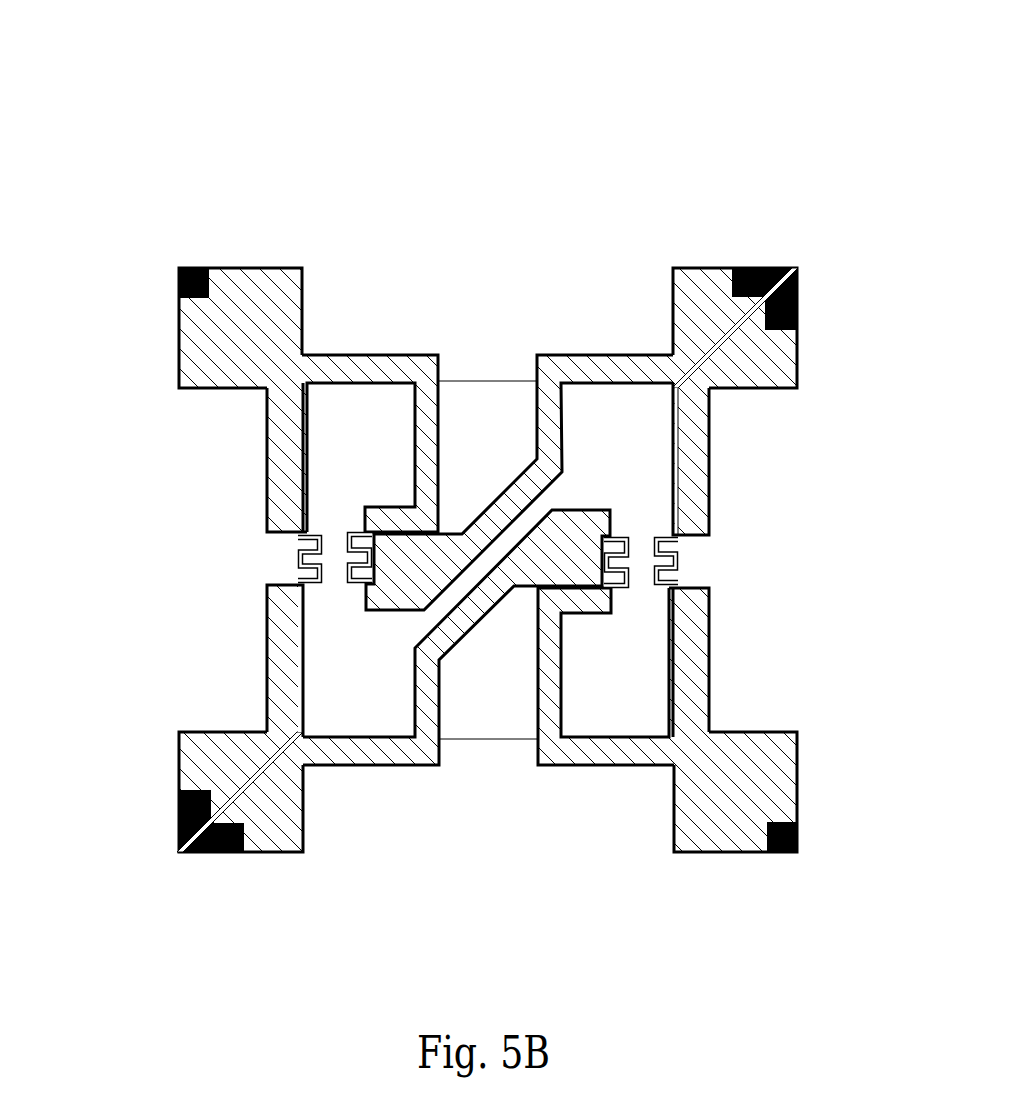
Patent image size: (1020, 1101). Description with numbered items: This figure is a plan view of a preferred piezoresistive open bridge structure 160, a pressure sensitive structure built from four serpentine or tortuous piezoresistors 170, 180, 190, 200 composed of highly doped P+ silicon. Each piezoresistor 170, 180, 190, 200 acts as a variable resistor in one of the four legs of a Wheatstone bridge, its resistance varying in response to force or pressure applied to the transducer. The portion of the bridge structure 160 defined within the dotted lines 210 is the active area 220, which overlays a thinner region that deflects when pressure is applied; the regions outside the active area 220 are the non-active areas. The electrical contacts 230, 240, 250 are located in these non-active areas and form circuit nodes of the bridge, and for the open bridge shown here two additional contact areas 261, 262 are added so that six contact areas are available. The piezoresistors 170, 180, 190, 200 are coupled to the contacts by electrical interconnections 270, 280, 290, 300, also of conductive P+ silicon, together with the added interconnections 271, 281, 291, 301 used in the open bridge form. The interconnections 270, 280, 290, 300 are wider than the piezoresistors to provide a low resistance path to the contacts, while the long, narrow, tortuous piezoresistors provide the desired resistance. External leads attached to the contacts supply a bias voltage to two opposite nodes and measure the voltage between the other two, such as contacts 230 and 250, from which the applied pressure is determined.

The piezoresistive bridge structure 160 is at (366, 93).
The piezoresistor 170 is at (310, 591).
The piezoresistor 180 is at (350, 531).
The piezoresistor 190 is at (618, 534).
The piezoresistor 200 is at (666, 590).
The dotted lines 210 is at (490, 379).
The active area 220 is at (694, 502).
The electrical contact 230 is at (743, 264).
The electrical contact 240 is at (200, 263).
The electrical contact 250 is at (202, 855).
The additional contact area 261 is at (753, 855).
The additional contact area 262 is at (802, 300).
The electrical interconnection 270 is at (711, 450).
The interconnection 271 is at (600, 353).
The electrical interconnection 280 is at (365, 353).
The interconnection 281 is at (263, 454).
The electrical interconnection 290 is at (263, 684).
The interconnection 291 is at (365, 769).
The electrical interconnection 300 is at (598, 769).
The interconnection 301 is at (714, 684).